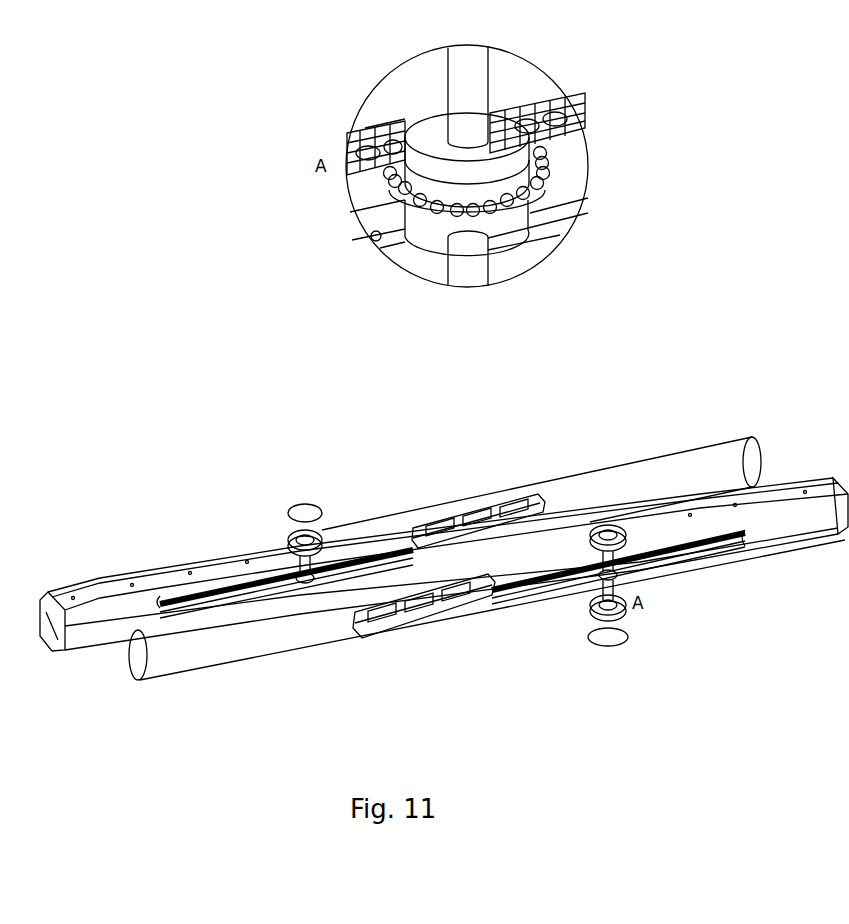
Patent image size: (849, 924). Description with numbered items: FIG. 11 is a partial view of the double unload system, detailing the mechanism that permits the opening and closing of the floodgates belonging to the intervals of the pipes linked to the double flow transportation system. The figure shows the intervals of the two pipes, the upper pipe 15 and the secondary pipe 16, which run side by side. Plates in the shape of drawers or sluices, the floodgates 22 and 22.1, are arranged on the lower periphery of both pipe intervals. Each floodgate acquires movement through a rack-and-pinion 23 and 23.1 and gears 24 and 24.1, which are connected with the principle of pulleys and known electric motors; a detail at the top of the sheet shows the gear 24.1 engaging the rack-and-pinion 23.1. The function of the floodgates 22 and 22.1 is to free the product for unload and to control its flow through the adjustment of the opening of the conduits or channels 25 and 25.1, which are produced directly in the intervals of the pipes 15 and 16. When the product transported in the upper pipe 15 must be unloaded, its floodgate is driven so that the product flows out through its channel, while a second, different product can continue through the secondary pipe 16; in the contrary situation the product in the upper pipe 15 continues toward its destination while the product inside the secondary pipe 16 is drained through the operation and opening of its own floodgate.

The upper pipe 15 is at (745, 462).
The secondary pipe 16 is at (183, 652).
The floodgate 22 is at (377, 547).
The floodgate 22.1 is at (515, 592).
The rack-and-pinion 23 is at (210, 590).
The rack-and-pinion 23.1 is at (573, 118).
The gear 24 is at (298, 578).
The gear 24.1 is at (427, 127).
The channel 25 is at (547, 521).
The channel 25.1 is at (413, 607).